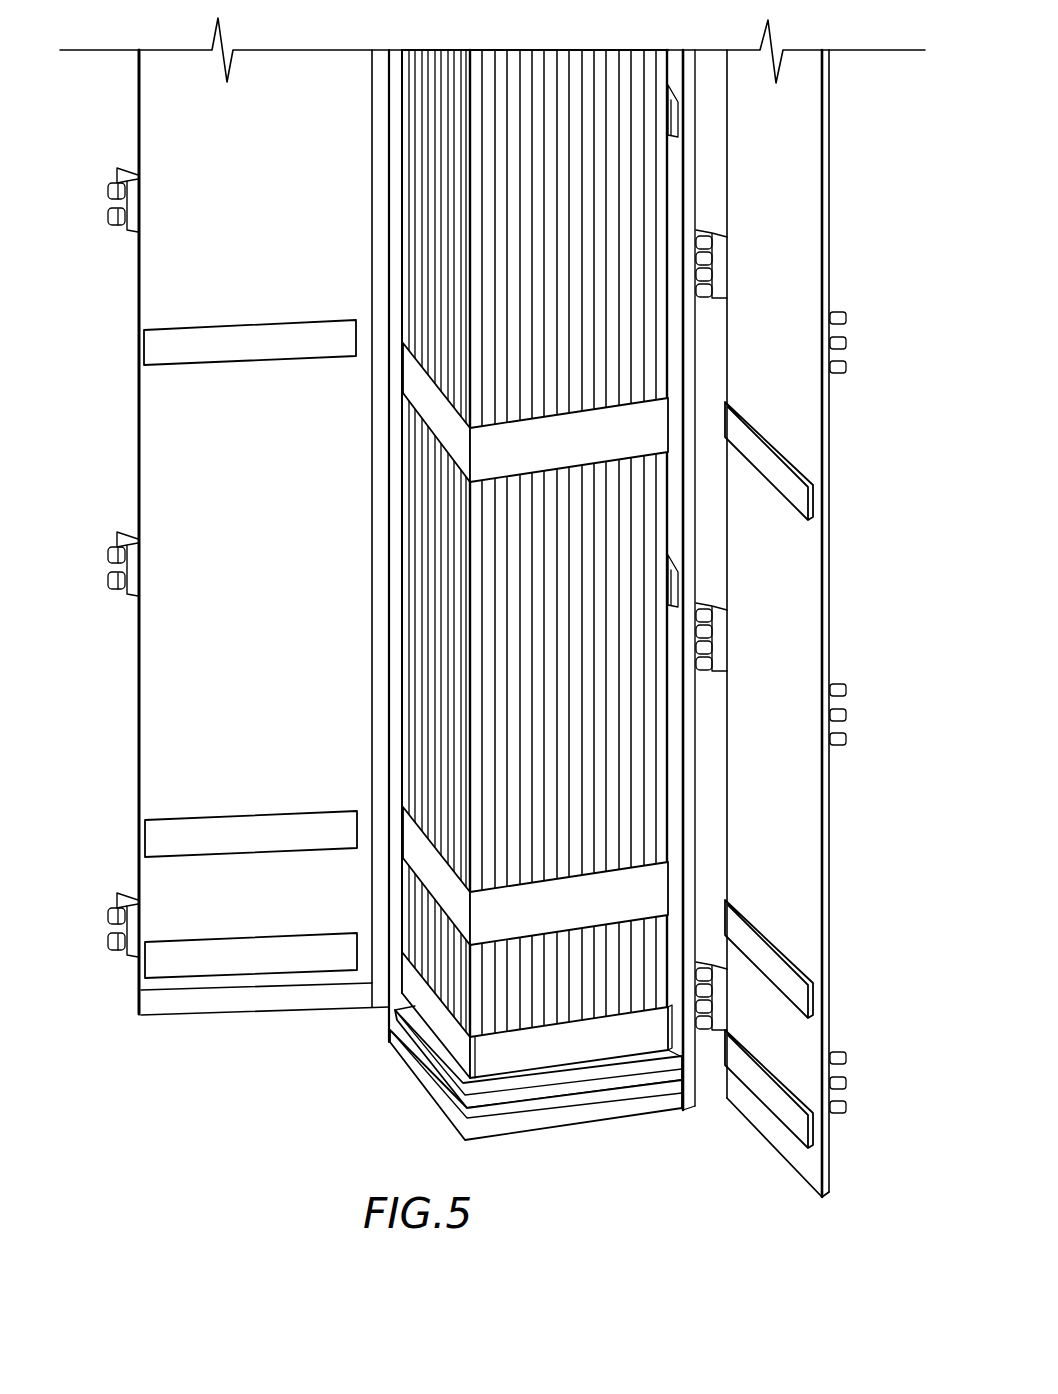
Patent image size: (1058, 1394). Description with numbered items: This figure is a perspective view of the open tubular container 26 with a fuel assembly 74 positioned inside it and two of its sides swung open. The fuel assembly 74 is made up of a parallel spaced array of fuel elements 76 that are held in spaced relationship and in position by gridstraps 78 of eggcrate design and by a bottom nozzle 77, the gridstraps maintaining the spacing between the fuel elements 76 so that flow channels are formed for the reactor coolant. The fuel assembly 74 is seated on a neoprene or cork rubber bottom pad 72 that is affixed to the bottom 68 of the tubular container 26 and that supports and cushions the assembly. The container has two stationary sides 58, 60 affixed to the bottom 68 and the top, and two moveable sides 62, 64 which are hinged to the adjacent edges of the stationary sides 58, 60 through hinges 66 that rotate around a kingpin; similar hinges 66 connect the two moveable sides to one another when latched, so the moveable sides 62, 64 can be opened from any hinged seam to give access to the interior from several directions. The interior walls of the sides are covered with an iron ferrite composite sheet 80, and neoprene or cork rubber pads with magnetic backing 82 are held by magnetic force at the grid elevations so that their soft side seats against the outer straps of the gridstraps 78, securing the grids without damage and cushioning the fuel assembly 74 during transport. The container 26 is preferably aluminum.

The tubular container 26 is at (846, 482).
The stationary side 58 is at (697, 1085).
The stationary side 60 is at (393, 978).
The moveable side 62 is at (139, 686).
The moveable side 64 is at (832, 607).
The hinges 66 is at (112, 912).
The bottom 68 is at (497, 1135).
The bottom pad 72 is at (470, 1087).
The fuel assembly 74 is at (652, 750).
The fuel elements 76 is at (612, 62).
The bottom nozzle 77 is at (433, 1010).
The gridstraps 78 is at (660, 415).
The iron ferrite composite sheet 80 is at (148, 870).
The pads with magnetic backing 82 is at (245, 818).